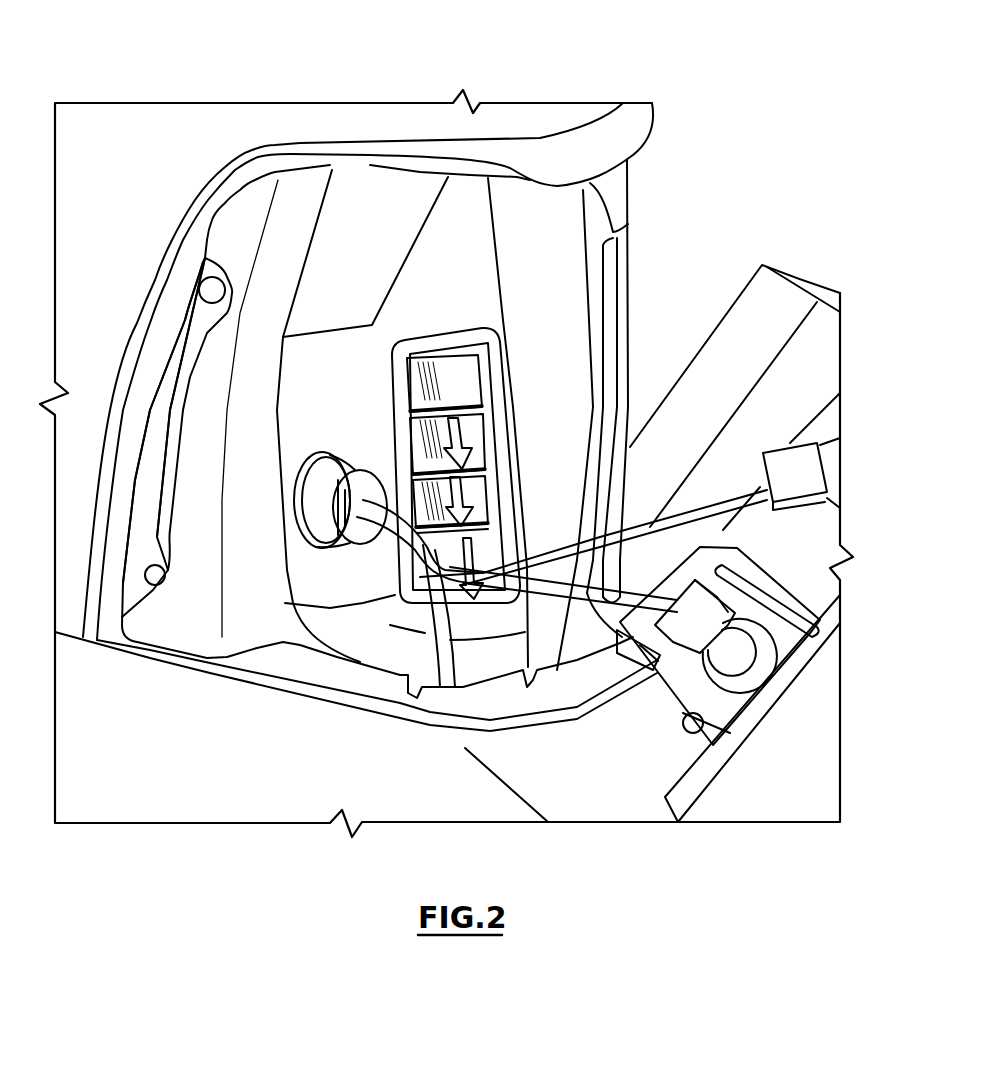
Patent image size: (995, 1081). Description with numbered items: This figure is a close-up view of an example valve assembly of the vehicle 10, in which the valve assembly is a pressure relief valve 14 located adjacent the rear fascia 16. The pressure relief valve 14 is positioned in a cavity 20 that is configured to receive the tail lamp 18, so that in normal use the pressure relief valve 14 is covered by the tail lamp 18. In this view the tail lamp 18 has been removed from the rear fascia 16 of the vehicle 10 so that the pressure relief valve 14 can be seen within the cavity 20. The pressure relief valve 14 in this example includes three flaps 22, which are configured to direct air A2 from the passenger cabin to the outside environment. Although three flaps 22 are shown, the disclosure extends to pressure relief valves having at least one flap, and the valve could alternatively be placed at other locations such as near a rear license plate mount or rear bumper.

The vehicle 10 is at (283, 96).
The pressure relief valve 14 is at (448, 444).
The rear fascia 16 is at (428, 128).
The tail lamp 18 is at (770, 777).
The cavity 20 is at (257, 447).
The flaps 22 is at (417, 497).
The air A2 is at (470, 550).